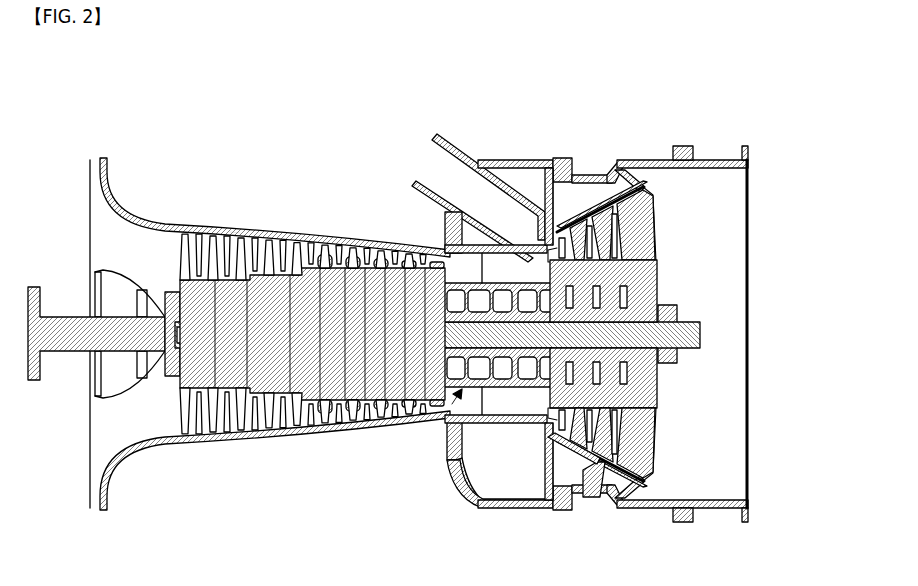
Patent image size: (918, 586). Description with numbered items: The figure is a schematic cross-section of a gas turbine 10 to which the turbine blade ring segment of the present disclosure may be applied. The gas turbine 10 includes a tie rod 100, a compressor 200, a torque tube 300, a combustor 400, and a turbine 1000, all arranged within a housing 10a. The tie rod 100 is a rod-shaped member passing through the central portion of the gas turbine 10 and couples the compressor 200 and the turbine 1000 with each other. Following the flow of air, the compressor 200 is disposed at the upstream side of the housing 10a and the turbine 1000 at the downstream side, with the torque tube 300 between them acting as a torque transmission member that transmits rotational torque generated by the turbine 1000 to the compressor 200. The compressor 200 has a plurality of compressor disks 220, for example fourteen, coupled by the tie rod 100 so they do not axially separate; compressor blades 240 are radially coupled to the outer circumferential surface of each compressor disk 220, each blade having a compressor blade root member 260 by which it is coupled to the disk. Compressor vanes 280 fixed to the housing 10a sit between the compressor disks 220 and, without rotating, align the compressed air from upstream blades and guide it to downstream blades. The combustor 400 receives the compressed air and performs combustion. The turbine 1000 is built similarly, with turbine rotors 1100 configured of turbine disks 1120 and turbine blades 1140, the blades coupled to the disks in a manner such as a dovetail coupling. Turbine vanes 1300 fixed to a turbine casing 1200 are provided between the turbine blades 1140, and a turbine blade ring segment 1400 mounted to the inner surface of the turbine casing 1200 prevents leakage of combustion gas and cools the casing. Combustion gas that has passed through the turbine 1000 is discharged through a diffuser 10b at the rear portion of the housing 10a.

The gas turbine 10 is at (214, 87).
The housing 10a is at (278, 224).
The diffuser 10b is at (714, 151).
The tie rod 100 is at (326, 441).
The compressor 200 is at (222, 452).
The compressor disk 220 is at (352, 258).
The compressor blade 240 is at (326, 251).
The compressor blade root member 260 is at (267, 266).
The compressor vane 280 is at (236, 245).
The torque tube 300 is at (458, 470).
The combustor 400 is at (452, 136).
The turbine 1000 is at (657, 211).
The turbine rotor 1100 is at (723, 294).
The turbine disk 1120 is at (640, 256).
The turbine blade 1140 is at (640, 292).
The turbine casing 1200 is at (623, 182).
The turbine vane 1300 is at (628, 437).
The turbine blade ring segment 1400 is at (598, 477).